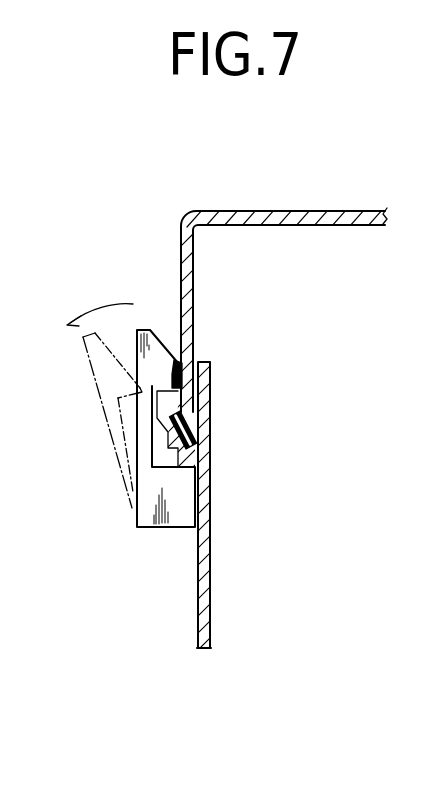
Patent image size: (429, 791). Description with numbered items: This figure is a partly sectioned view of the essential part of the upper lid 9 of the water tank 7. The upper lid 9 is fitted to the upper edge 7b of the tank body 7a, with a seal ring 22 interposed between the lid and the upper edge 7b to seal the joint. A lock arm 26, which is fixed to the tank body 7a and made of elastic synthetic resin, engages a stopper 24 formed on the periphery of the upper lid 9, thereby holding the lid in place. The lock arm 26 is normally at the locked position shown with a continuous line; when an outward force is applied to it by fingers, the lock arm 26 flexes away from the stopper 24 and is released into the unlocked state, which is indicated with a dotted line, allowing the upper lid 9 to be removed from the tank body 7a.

The upper lid 9 is at (200, 214).
The water tank 7 is at (213, 525).
The tank body 7a is at (202, 632).
The upper edge 7b is at (205, 400).
The lock arm 26 is at (143, 489).
The stopper 24 is at (193, 358).
The seal ring 22 is at (197, 442).